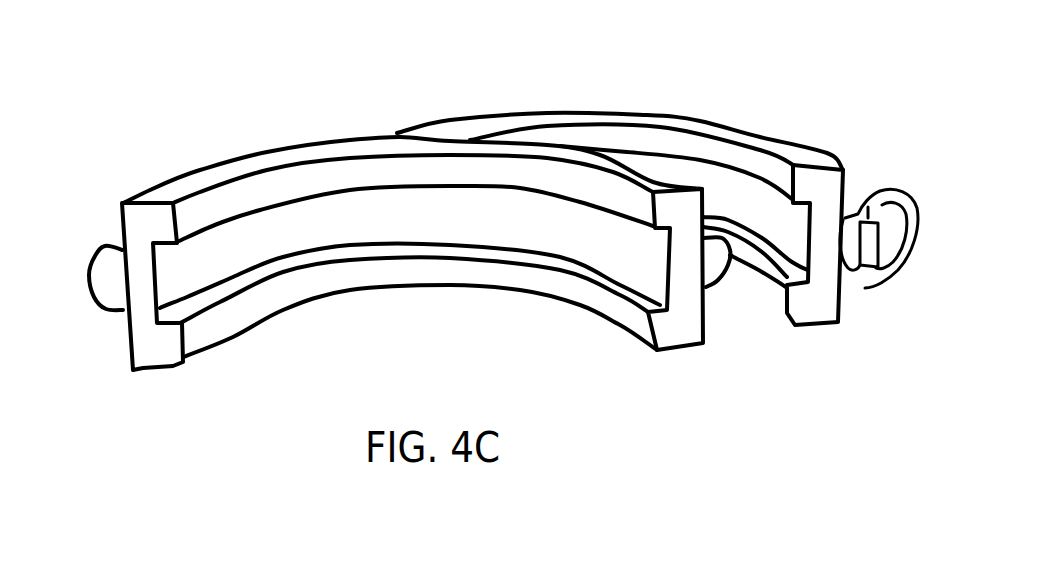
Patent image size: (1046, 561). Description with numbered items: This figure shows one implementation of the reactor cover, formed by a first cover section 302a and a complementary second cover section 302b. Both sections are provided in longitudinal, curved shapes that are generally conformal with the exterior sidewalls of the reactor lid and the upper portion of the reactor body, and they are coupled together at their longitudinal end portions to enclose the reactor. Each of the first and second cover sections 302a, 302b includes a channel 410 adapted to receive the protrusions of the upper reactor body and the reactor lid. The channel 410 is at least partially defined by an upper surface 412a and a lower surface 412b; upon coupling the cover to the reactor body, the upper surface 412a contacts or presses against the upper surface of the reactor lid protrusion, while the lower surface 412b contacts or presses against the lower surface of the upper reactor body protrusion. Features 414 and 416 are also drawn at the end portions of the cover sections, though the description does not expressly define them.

The first cover section 302a is at (370, 239).
The second cover section 302b is at (670, 213).
The channel 410 is at (176, 292).
The upper surface 412a is at (345, 193).
The lower surface 412b is at (384, 243).
The protrusion 414 is at (93, 250).
The clip 416 is at (891, 170).